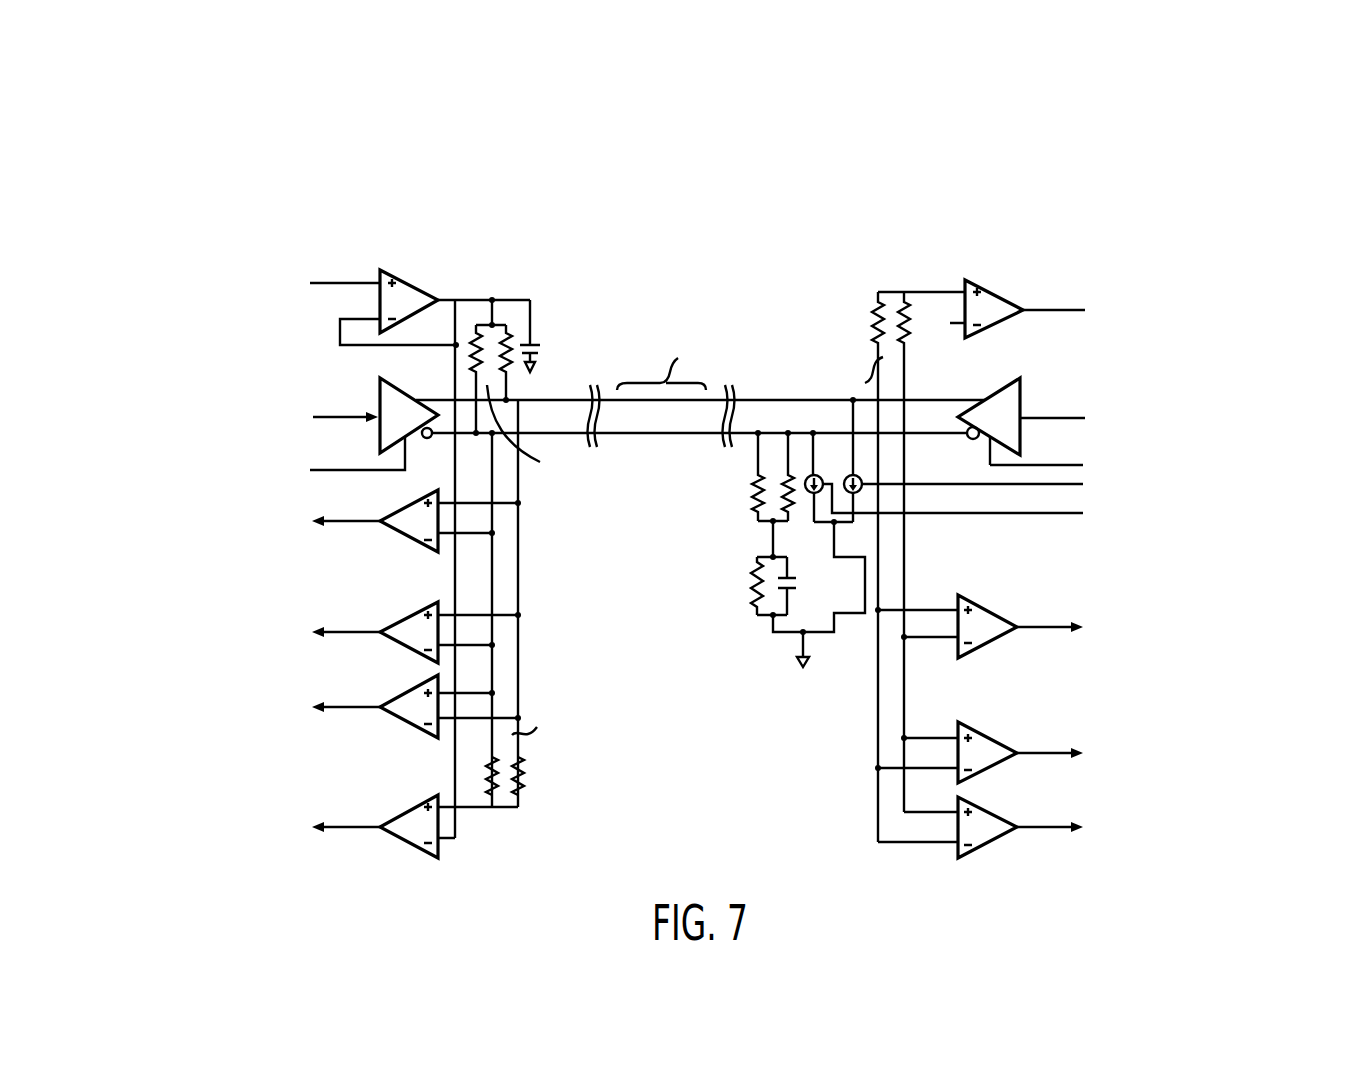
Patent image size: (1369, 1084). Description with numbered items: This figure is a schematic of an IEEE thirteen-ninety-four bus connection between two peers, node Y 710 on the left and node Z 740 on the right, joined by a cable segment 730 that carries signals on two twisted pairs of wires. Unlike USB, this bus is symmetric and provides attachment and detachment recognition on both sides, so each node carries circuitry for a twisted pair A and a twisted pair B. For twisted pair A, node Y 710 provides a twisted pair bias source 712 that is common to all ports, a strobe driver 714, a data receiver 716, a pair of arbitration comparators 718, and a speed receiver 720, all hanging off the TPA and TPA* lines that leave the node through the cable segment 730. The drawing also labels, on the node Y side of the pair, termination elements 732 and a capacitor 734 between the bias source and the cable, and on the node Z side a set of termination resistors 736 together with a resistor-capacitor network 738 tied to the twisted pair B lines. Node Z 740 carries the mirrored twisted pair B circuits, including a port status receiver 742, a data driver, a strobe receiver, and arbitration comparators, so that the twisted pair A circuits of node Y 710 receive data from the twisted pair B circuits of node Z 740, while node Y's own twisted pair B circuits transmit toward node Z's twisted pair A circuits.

The node Y 710 is at (378, 178).
The twisted pair bias source 712 is at (140, 278).
The strobe driver 714 is at (137, 421).
The data receiver 716 is at (137, 514).
The pair of arbitration comparators 718 is at (137, 662).
The speed receiver 720 is at (137, 807).
The cable segment 730 is at (733, 300).
The termination resistors 732 is at (470, 357).
The capacitor 734 is at (508, 343).
The termination resistors 736 is at (742, 495).
The RC network 738 is at (785, 505).
The node Z 740 is at (973, 170).
The port status receiver 742 is at (1250, 268).